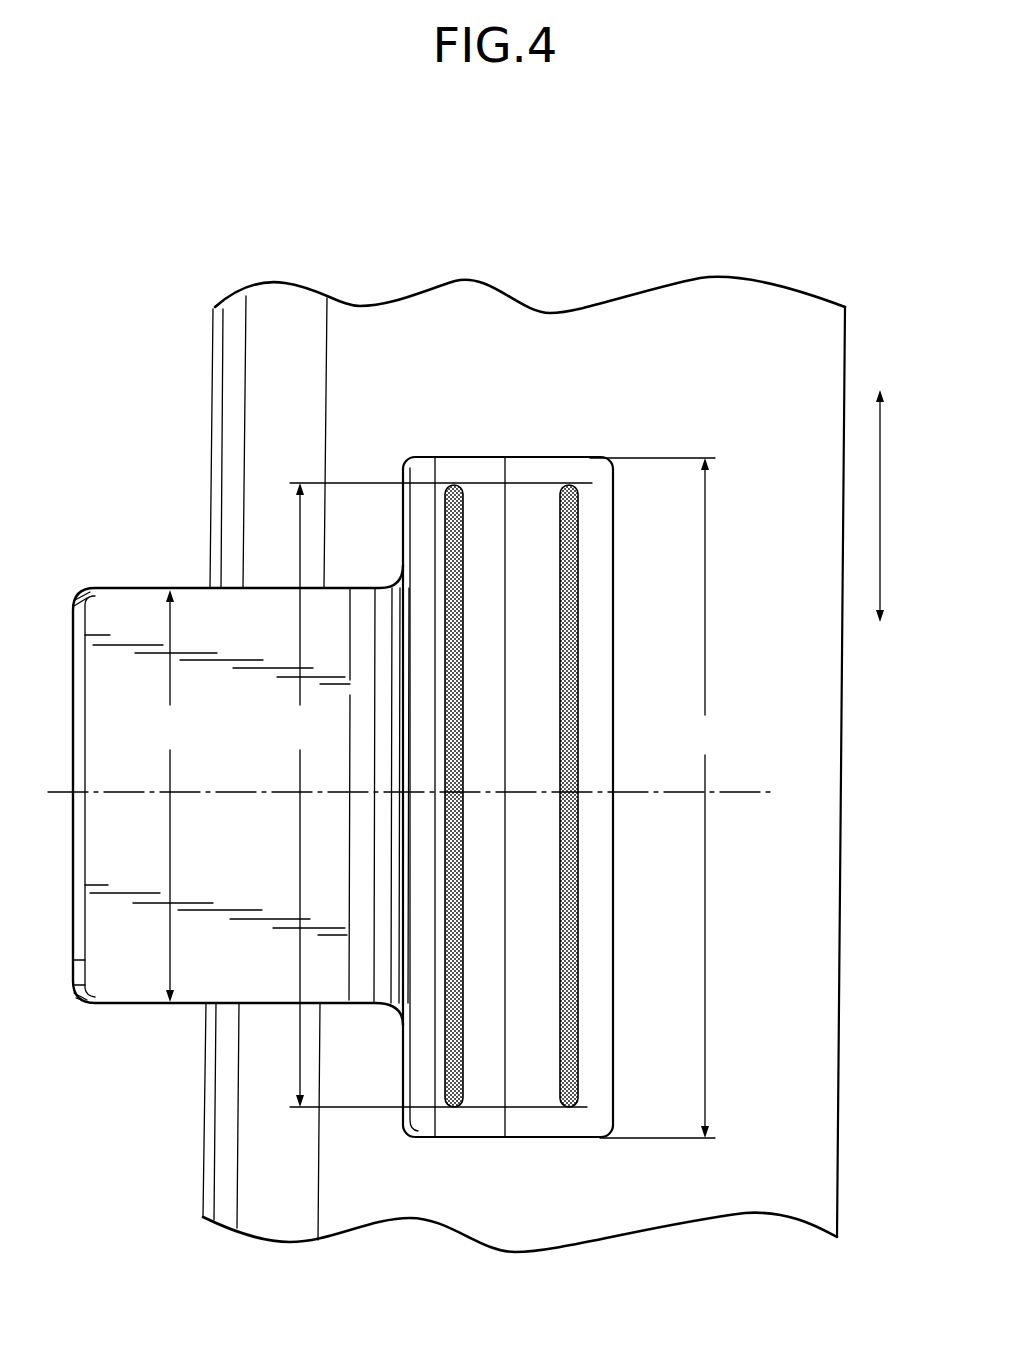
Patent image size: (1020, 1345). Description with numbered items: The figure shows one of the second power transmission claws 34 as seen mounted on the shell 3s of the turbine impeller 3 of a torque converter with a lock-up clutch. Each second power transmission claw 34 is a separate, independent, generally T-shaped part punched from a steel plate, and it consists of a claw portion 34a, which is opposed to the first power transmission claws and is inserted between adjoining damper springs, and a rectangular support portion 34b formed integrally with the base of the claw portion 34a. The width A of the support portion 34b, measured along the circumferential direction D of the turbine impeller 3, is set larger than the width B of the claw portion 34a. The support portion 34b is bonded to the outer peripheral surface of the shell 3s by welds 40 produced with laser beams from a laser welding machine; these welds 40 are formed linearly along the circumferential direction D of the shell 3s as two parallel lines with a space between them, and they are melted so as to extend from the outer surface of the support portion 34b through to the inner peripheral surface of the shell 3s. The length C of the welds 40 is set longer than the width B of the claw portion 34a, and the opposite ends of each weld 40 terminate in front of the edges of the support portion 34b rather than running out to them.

The turbine impeller 3 is at (524, 708).
The shell 3s is at (625, 330).
The second power transmission claw 34 is at (150, 213).
The claw portion 34a is at (253, 605).
The support portion 34b is at (480, 467).
The weld 40 is at (465, 525).
The width of the support portion A is at (652, 798).
The width of the claw portion B is at (169, 796).
The length of the welds C is at (441, 795).
The circumferential direction D is at (878, 508).